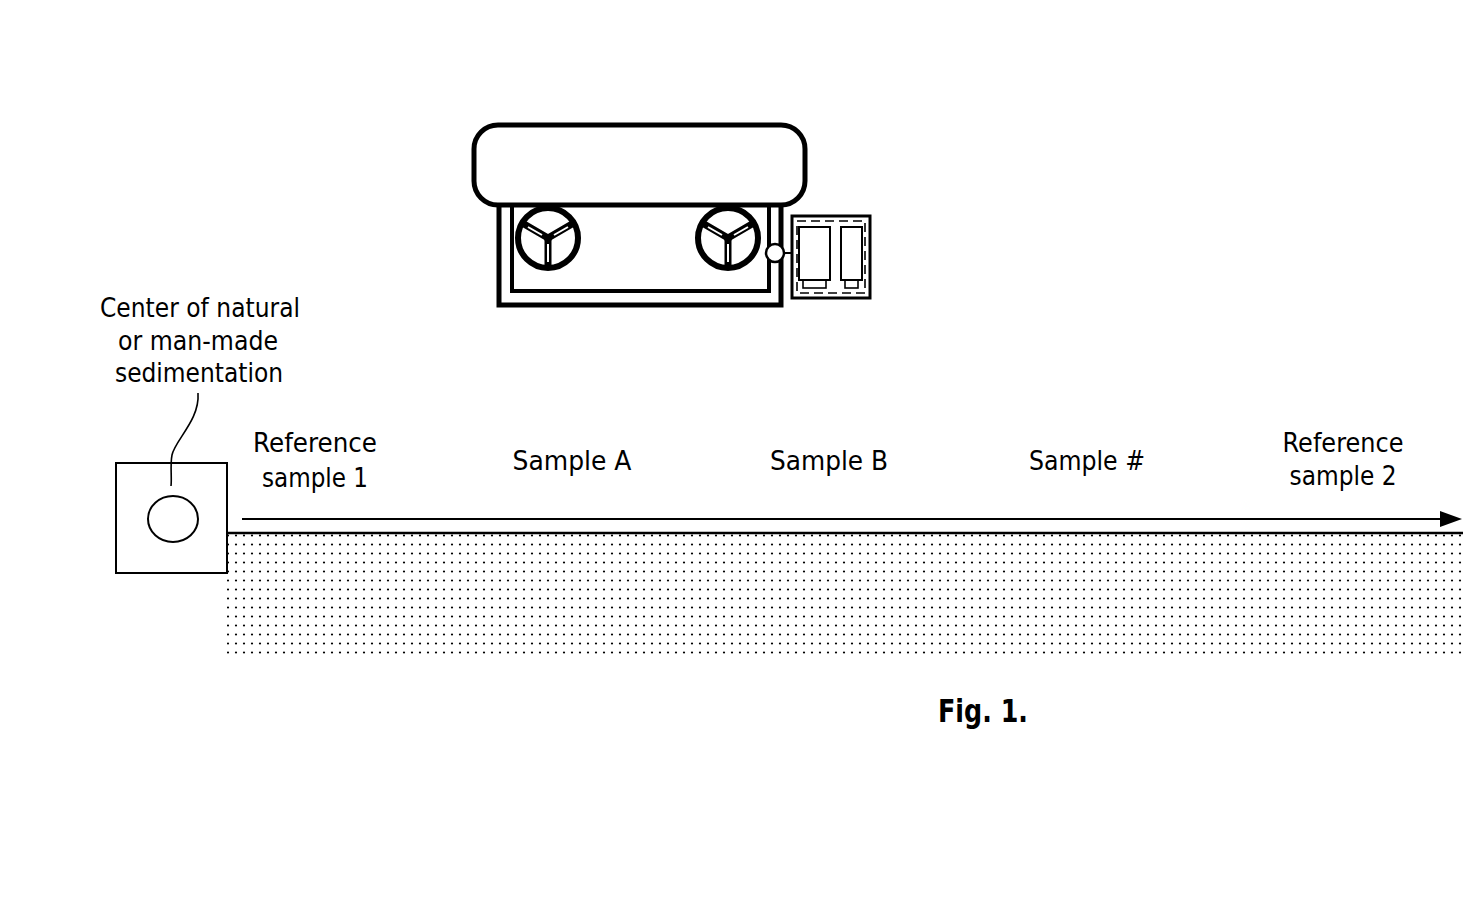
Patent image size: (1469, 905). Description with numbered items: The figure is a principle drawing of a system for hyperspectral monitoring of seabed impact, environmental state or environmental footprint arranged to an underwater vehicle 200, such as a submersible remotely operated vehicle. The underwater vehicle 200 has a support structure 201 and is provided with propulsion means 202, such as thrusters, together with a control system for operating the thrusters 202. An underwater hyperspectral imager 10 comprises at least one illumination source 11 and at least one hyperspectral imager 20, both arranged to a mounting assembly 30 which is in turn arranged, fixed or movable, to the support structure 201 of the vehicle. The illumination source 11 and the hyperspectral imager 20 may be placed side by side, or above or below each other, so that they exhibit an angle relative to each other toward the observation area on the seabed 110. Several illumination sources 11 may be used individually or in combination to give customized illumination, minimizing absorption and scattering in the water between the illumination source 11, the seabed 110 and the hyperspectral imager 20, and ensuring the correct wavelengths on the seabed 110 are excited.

The underwater vehicle 200 is at (636, 104).
The support structure 201 is at (497, 289).
The propulsion means 202 is at (511, 233).
The underwater hyperspectral imager 10 is at (876, 270).
The mounting assembly 30 is at (858, 208).
The hyperspectral imager 20 is at (813, 228).
The illumination source 11 is at (858, 254).
The seabed 110 is at (907, 581).